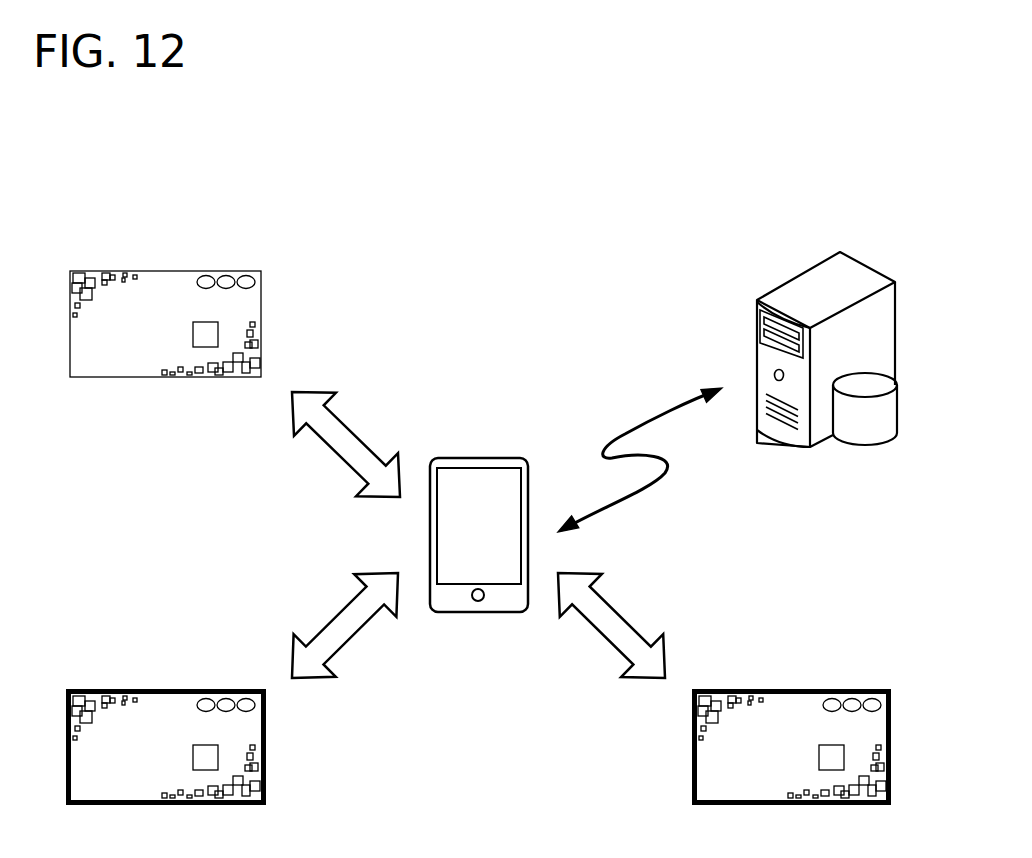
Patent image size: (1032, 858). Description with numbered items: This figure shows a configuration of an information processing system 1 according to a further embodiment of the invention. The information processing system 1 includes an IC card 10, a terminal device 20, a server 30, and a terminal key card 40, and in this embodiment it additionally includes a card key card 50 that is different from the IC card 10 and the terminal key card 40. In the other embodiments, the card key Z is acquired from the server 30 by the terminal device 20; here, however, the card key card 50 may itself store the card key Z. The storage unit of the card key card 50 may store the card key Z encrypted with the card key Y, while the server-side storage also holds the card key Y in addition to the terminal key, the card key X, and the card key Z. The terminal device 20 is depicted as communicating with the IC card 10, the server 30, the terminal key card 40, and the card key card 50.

The information processing system 1 is at (606, 185).
The IC card 10 is at (163, 271).
The terminal device 20 is at (478, 458).
The server 30 is at (873, 263).
The terminal key card 40 is at (163, 689).
The card key card 50 is at (790, 689).